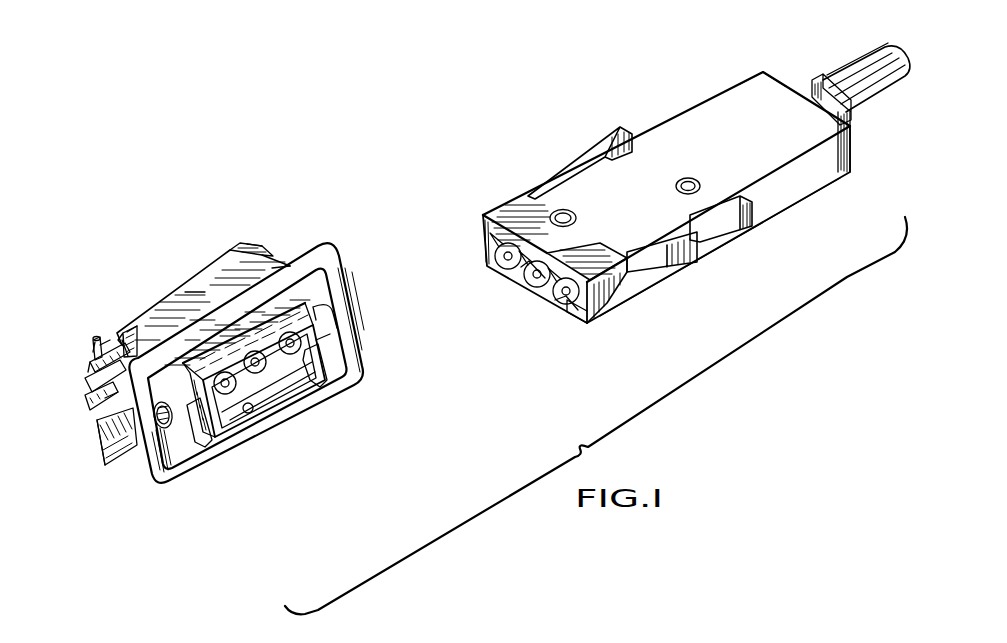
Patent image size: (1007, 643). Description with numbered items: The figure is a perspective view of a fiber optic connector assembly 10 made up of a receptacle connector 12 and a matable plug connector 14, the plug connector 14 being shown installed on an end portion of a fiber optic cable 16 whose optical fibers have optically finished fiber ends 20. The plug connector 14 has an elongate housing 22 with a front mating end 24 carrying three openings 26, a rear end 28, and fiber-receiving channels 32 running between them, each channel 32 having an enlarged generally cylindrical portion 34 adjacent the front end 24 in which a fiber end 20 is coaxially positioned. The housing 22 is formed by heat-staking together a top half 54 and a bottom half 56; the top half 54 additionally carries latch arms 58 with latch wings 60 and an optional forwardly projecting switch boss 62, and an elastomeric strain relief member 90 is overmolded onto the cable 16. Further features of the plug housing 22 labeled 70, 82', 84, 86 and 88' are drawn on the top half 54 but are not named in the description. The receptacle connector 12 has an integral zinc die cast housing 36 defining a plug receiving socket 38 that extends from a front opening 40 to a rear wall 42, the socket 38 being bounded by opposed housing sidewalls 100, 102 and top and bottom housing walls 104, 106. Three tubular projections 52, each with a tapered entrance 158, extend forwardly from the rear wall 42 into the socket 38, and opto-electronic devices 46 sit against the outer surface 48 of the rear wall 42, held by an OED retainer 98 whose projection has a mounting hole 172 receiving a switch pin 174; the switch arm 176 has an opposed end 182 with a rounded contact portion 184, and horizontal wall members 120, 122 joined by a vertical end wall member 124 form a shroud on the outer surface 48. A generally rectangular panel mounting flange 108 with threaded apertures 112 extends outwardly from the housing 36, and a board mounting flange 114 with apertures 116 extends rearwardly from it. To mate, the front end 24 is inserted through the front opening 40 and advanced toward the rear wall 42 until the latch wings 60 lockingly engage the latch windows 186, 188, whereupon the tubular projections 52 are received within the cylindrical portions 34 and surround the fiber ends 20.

The connector assembly 10 is at (403, 130).
The receptacle connector 12 is at (207, 165).
The plug connector 14 is at (708, 50).
The fiber optic cable 16 is at (860, 53).
The fiber ends 20 is at (528, 282).
The housing 22 is at (680, 120).
The front mating end 24 is at (577, 318).
The openings 26 is at (563, 305).
The rear end 28 is at (782, 50).
The fiber-receiving channels 32 is at (533, 290).
The enlarged generally cylindrical portion 34 is at (505, 268).
The housing 36 is at (214, 270).
The plug receiving socket 38 is at (270, 393).
The front opening 40 is at (250, 410).
The rear wall 42 is at (256, 252).
The opto-electronic devices 46 is at (77, 343).
The outer surface 48 is at (100, 340).
The tubular projections 52 is at (320, 386).
The top half 54 is at (850, 133).
The bottom half 56 is at (827, 177).
The latch arms 58 is at (622, 130).
The latch wings 60 is at (565, 158).
The switch boss 62 is at (612, 293).
The mounting bracket 70 is at (110, 398).
The aperture 82' is at (585, 197).
The boss 84 is at (677, 192).
The aperture bore 86 is at (576, 222).
The bore 88' is at (712, 169).
The strain relief member 90 is at (807, 77).
The OED retainer 98 is at (72, 404).
The housing sidewall 100 is at (127, 332).
The housing sidewall 102 is at (277, 268).
The top housing wall 104 is at (195, 290).
The bottom housing wall 106 is at (210, 445).
The panel mounting flange 108 is at (330, 272).
The threaded aperture 112 is at (173, 473).
The board mounting flange 114 is at (117, 443).
The apertures 116 is at (122, 438).
The wall member 120 is at (213, 283).
The wall member 122 is at (333, 315).
The end wall member 124 is at (240, 250).
The tapered entrance 158 is at (283, 397).
The mounting hole 172 is at (98, 375).
The switch pin 174 is at (97, 340).
The switch arm 176 is at (103, 350).
The opposed end 182 is at (97, 363).
The rounded contact portion 184 is at (95, 350).
The latch window 186 is at (153, 445).
The latch window 188 is at (320, 347).